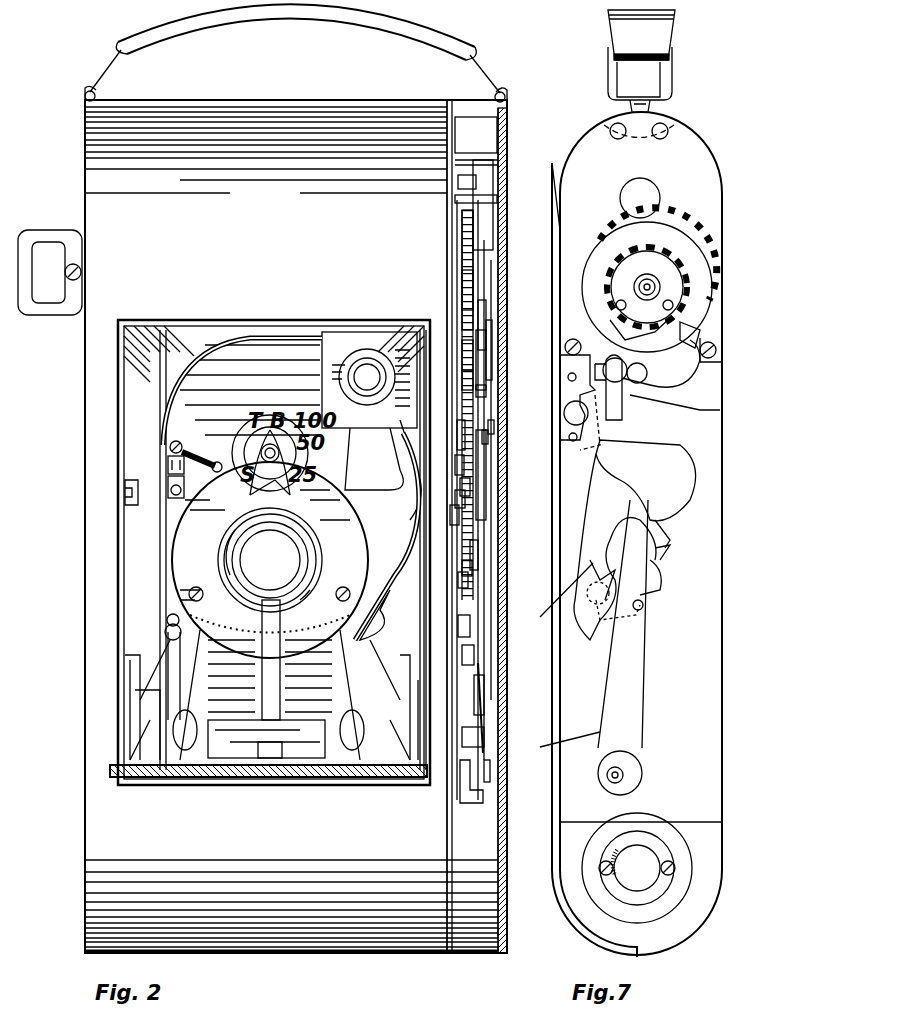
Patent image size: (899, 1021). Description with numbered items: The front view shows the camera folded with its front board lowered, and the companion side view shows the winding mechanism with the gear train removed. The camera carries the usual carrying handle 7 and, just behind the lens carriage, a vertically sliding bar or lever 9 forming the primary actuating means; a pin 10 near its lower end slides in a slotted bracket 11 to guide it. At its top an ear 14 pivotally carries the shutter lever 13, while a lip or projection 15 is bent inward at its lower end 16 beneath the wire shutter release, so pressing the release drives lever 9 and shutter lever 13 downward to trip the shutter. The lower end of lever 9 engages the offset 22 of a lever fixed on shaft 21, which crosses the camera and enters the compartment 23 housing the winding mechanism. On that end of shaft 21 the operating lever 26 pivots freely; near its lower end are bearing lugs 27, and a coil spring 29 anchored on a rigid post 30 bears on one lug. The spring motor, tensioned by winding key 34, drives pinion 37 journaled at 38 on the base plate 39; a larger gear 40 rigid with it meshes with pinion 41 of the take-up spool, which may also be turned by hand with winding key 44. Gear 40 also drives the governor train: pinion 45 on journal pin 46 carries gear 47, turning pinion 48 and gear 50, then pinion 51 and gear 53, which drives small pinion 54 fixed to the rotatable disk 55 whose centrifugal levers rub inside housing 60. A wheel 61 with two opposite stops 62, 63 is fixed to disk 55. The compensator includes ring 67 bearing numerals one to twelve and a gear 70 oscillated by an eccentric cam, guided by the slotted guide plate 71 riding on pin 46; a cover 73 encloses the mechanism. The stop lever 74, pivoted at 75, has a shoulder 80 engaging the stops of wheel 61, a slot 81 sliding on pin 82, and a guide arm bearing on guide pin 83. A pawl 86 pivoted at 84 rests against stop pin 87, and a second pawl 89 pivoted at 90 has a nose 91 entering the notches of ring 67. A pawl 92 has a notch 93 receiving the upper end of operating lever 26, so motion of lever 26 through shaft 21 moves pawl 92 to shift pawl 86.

In FIG. 2, the carrying handle 7 is at (478, 43).
In FIG. 7, the carrying handle 7 is at (665, 29).
In FIG. 2, the sliding bar or lever 9 is at (172, 602).
In FIG. 2, the pin 10 is at (164, 632).
In FIG. 2, the slotted bracket 11 is at (182, 684).
In FIG. 2, the shutter lever 13 is at (175, 458).
In FIG. 2, the ear 14 is at (168, 445).
In FIG. 2, the lip or projection 15 is at (168, 462).
In FIG. 2, the bent projection 16 is at (168, 492).
In FIG. 7, the shaft 21 is at (625, 772).
In FIG. 2, the offset 22 is at (160, 420).
In FIG. 2, the compartment 23 is at (480, 793).
In FIG. 2, the operating lever 26 is at (481, 668).
In FIG. 7, the operating lever 26 is at (633, 643).
In FIG. 2, the bearing lugs 27 is at (473, 743).
In FIG. 7, the bearing lugs 27 is at (642, 732).
In FIG. 2, the coil spring 29 is at (488, 770).
In FIG. 2, the rigid post 30 is at (481, 683).
In FIG. 2, the winding key 34 is at (43, 306).
In FIG. 2, the pinion 37 is at (468, 267).
In FIG. 7, the journal 38 is at (648, 283).
In FIG. 2, the base plate 39 is at (448, 810).
In FIG. 7, the base plate 39 is at (682, 597).
In FIG. 2, the larger gear 40 is at (467, 280).
In FIG. 2, the pinion 41 is at (470, 182).
In FIG. 2, the winding key 44 is at (480, 205).
In FIG. 2, the pinion 45 is at (467, 343).
In FIG. 7, the journal pin 46 is at (652, 372).
In FIG. 2, the larger gear 47 is at (467, 377).
In FIG. 2, the pinion 48 is at (460, 430).
In FIG. 2, the gear 50 is at (458, 463).
In FIG. 2, the pinion 51 is at (460, 497).
In FIG. 2, the gear 53 is at (463, 487).
In FIG. 2, the small pinion 54 is at (453, 513).
In FIG. 2, the rotatable disk 55 is at (465, 628).
In FIG. 2, the circular housing 60 is at (470, 655).
In FIG. 7, the wheel 61 is at (663, 557).
In FIG. 7, the tooth or stop 62 is at (668, 538).
In FIG. 7, the tooth or stop 63 is at (612, 568).
In FIG. 7, the ring 67 is at (673, 248).
In FIG. 7, the gear 70 is at (668, 282).
In FIG. 2, the guide plate 71 is at (480, 337).
In FIG. 7, the guide plate 71 is at (640, 325).
In FIG. 2, the cover 73 is at (499, 845).
In FIG. 2, the stop lever 74 is at (472, 553).
In FIG. 7, the stop lever 74 is at (603, 473).
In FIG. 2, the pivot 75 is at (490, 345).
In FIG. 2, the shoulder 80 is at (463, 577).
In FIG. 2, the slot 81 is at (467, 567).
In FIG. 7, the pin 82 is at (692, 343).
In FIG. 7, the guide pin 83 is at (716, 352).
In FIG. 2, the pivot 84 is at (468, 392).
In FIG. 7, the pivot 84 is at (580, 402).
In FIG. 2, the pawl 86 is at (500, 427).
In FIG. 2, the stop pin 87 is at (487, 437).
In FIG. 7, the second pawl 89 is at (628, 395).
In FIG. 7, the pivot 90 is at (618, 393).
In FIG. 2, the nose 91 is at (552, 165).
In FIG. 7, the pawl 92 is at (630, 460).
In FIG. 7, the notch 93 is at (670, 522).